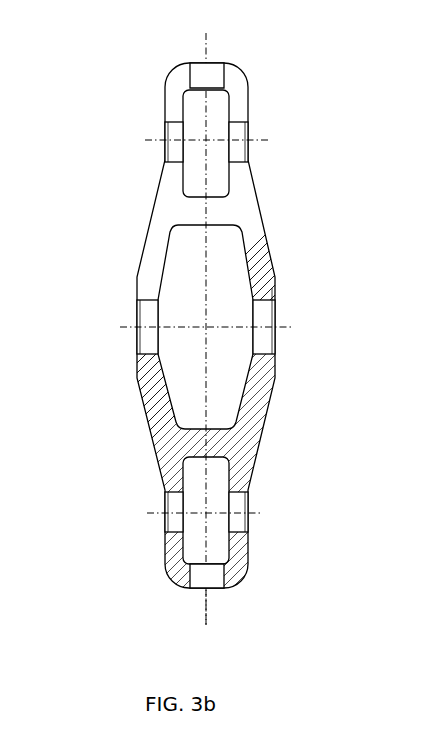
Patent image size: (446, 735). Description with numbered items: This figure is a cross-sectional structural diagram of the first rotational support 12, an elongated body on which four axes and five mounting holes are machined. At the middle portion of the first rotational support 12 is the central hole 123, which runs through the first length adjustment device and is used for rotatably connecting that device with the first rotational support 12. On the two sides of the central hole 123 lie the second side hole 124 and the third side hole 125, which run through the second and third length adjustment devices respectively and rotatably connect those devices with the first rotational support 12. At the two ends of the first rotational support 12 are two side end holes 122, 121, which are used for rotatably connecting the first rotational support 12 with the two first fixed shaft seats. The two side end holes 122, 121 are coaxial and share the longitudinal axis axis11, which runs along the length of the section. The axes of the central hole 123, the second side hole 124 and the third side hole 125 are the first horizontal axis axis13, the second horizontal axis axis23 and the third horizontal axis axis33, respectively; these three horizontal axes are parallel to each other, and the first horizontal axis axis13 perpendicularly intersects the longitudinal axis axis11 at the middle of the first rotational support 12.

The first rotational support 12 is at (290, 660).
The side end hole 121 is at (212, 73).
The side end hole 122 is at (212, 578).
The central hole 123 is at (268, 348).
The second side hole 124 is at (240, 525).
The third side hole 125 is at (240, 157).
The third horizontal axis axis33 is at (150, 140).
The first horizontal axis axis13 is at (137, 327).
The second horizontal axis axis23 is at (152, 513).
The longitudinal axis axis11 is at (203, 612).